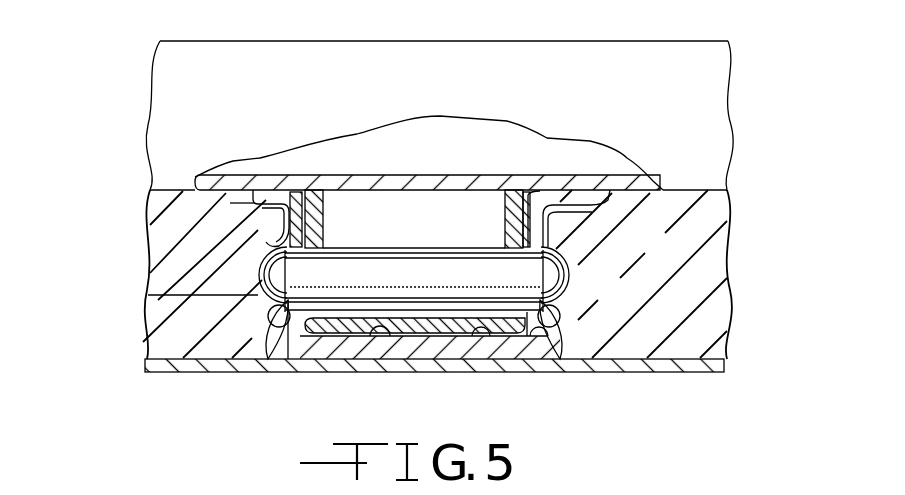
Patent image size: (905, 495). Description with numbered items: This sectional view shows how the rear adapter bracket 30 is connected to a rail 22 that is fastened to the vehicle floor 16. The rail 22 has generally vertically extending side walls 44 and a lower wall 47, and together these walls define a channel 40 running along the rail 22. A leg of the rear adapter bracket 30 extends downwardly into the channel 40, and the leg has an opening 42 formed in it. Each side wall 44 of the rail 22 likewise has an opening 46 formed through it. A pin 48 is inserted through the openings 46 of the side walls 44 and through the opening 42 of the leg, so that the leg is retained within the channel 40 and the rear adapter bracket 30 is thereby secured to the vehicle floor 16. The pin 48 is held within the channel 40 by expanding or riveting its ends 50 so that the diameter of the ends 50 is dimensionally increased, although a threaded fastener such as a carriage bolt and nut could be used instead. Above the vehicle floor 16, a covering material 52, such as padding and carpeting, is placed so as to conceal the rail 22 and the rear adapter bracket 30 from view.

The vehicle floor 16 is at (652, 373).
The rail 22 is at (424, 345).
The rear adapter bracket 30 is at (592, 58).
The channel 40 is at (492, 345).
The opening 42 is at (507, 258).
The side wall 44 is at (265, 343).
The opening 46 is at (253, 197).
The lower wall 47 is at (382, 333).
The pin 48 is at (343, 277).
The end 50 is at (152, 303).
The covering material 52 is at (160, 257).